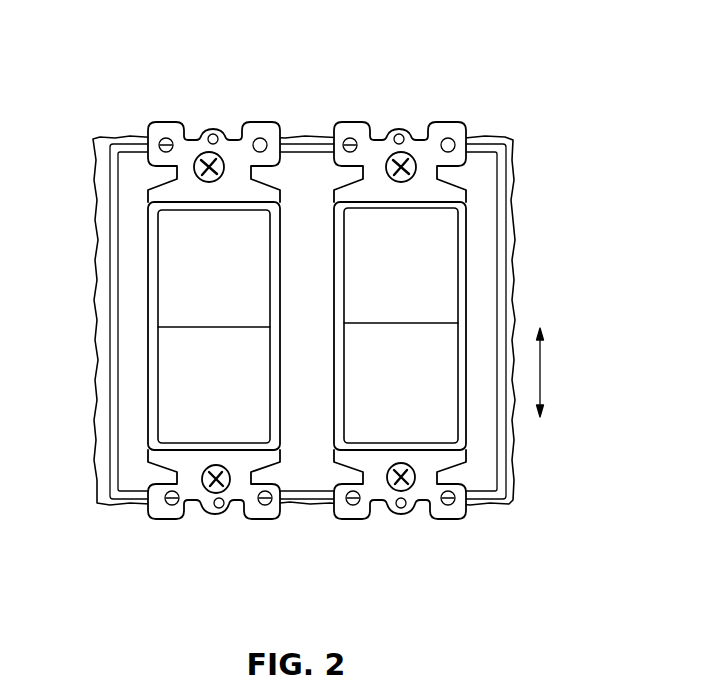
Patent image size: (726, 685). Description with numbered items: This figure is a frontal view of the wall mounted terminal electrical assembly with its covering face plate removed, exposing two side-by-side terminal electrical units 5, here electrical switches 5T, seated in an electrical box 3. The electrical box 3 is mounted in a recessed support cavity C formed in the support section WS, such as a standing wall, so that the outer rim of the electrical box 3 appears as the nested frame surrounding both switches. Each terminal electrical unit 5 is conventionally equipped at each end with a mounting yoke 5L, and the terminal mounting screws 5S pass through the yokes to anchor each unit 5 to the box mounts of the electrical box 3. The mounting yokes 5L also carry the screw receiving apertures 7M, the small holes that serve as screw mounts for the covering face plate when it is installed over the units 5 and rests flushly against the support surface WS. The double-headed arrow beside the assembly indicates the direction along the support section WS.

The electrical box 3 is at (107, 213).
The terminal electrical unit 5 is at (300, 300).
The electrical switch 5T is at (179, 303).
The terminal mounting screw 5S is at (199, 138).
The mounting yoke 5L is at (275, 128).
The screw receiving aperture 7M is at (214, 135).
The recessed support cavity C is at (102, 283).
The support surface WS is at (540, 377).